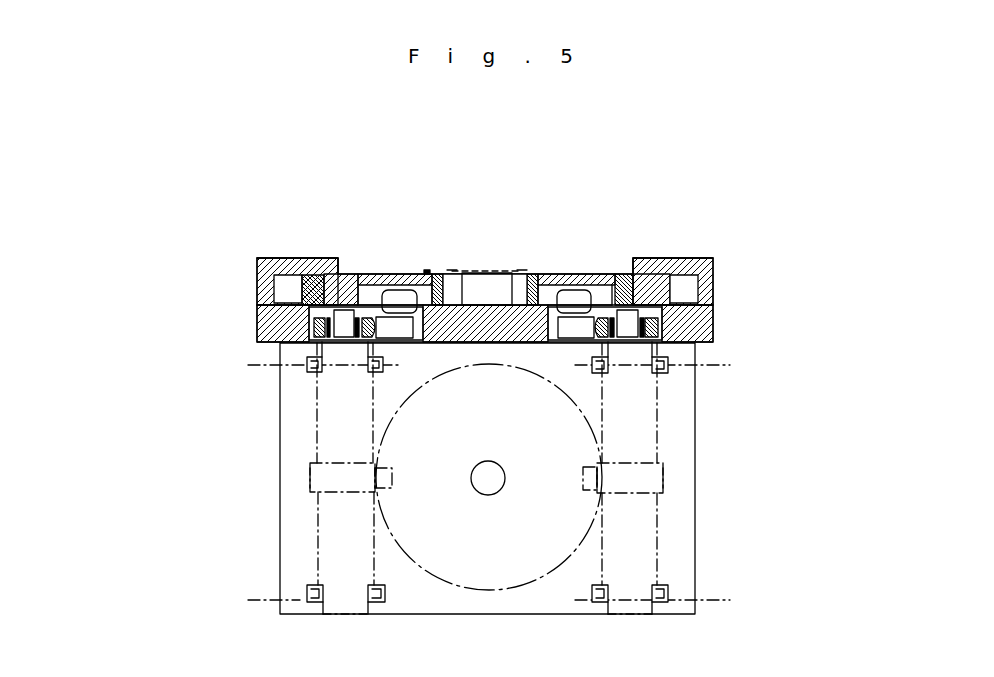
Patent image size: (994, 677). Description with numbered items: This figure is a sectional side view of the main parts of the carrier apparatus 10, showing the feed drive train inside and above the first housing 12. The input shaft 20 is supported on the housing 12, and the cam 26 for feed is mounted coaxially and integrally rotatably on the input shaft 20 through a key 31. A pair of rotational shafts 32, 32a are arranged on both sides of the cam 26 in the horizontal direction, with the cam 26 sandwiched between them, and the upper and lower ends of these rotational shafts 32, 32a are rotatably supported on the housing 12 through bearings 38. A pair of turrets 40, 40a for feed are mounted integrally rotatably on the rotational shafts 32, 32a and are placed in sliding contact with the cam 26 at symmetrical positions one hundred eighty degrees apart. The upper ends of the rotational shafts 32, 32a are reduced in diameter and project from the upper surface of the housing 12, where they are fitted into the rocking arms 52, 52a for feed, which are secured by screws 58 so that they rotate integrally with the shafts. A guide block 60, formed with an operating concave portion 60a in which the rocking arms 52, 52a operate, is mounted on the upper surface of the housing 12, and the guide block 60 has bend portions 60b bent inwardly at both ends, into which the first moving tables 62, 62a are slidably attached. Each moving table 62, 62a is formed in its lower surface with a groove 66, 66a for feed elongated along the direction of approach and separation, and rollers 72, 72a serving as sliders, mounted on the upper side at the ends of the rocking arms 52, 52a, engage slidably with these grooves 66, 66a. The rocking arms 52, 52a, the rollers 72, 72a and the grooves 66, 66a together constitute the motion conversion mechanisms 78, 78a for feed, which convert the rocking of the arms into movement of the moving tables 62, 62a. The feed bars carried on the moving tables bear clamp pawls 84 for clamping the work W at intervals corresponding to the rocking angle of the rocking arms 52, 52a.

The carrier apparatus 10 is at (705, 172).
The housing 12 is at (696, 560).
The input shaft 20 is at (487, 486).
The cam for feed 26 is at (523, 592).
The key 31 is at (506, 478).
The rotational shaft 32 is at (657, 436).
The rotational shaft 32a is at (310, 463).
The bearing 38 is at (307, 366).
The turret for feed 40 is at (663, 478).
The turret for feed 40a is at (310, 488).
The rocking arm for feed 52 is at (714, 320).
The rocking arm for feed 52a is at (310, 325).
The screw 58 is at (315, 275).
The guide block 60 is at (714, 273).
The operating concave portion 60a is at (395, 350).
The bend portion 60b is at (300, 258).
The first moving table 62 is at (576, 289).
The first moving table 62a is at (395, 289).
The groove for feed 66 is at (556, 274).
The groove for feed 66a is at (427, 270).
The roller 72 is at (590, 317).
The roller 72a is at (415, 317).
The motion conversion mechanism for feed 78 is at (588, 344).
The motion conversion mechanism for feed 78a is at (393, 344).
The clamp pawl 84 is at (450, 272).
The work W is at (487, 272).